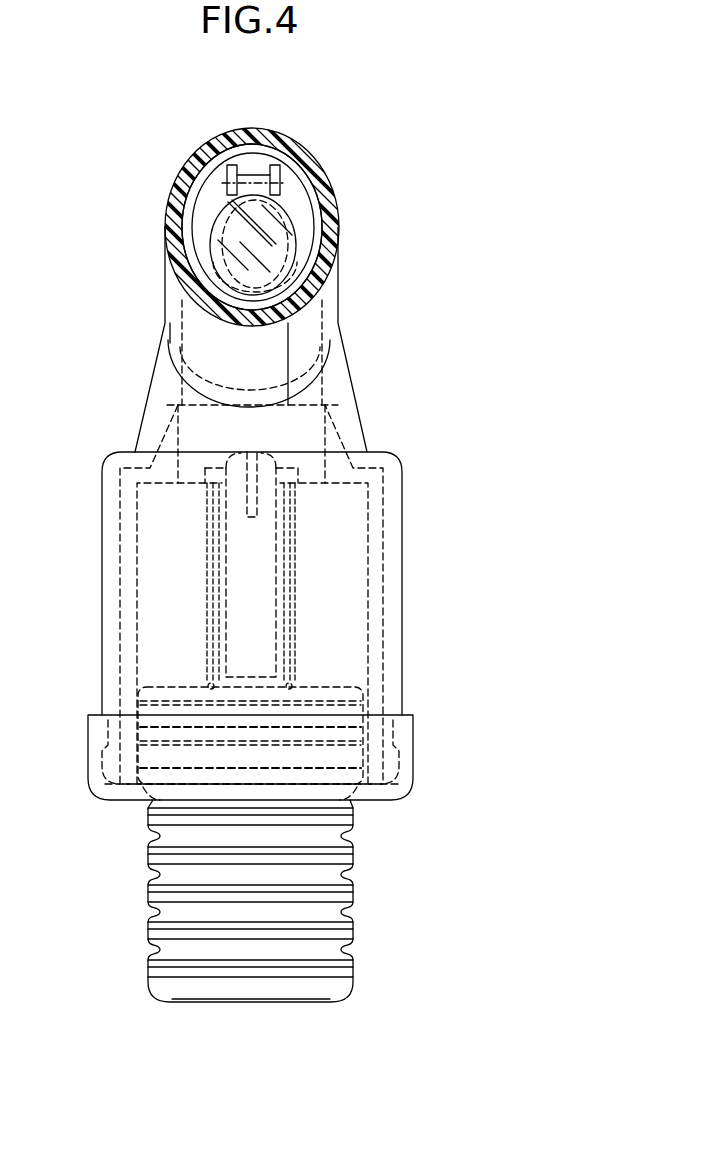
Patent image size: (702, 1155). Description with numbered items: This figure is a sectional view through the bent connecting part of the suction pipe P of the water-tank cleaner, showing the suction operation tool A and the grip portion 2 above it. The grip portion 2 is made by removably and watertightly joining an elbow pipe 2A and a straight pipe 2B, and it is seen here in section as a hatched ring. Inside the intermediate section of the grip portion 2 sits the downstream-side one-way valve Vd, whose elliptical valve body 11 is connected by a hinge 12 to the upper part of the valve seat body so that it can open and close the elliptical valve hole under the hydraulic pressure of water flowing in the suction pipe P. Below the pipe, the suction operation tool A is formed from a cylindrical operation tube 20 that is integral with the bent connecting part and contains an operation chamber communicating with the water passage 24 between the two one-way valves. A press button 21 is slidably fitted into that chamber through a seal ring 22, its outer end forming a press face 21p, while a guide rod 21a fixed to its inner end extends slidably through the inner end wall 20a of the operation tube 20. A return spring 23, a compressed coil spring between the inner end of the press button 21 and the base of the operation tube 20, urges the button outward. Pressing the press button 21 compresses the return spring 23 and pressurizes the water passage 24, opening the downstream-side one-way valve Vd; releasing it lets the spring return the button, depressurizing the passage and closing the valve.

The suction pipe P is at (328, 157).
The grip portion 2 is at (510, 173).
The elbow pipe 2A is at (338, 365).
The straight pipe 2B is at (337, 207).
The hinge 12 is at (216, 158).
The downstream-side one-way valve Vd is at (211, 213).
The valve body 11 is at (250, 278).
The water passage 24 is at (197, 240).
The operation tube 20 is at (398, 532).
The inner end wall 20a is at (297, 467).
The press button 21 is at (332, 913).
The guide rod 21a is at (262, 600).
The press face 21p is at (272, 1003).
The seal ring 22 is at (350, 745).
The return spring 23 is at (207, 545).
The suction operation tool A is at (405, 600).